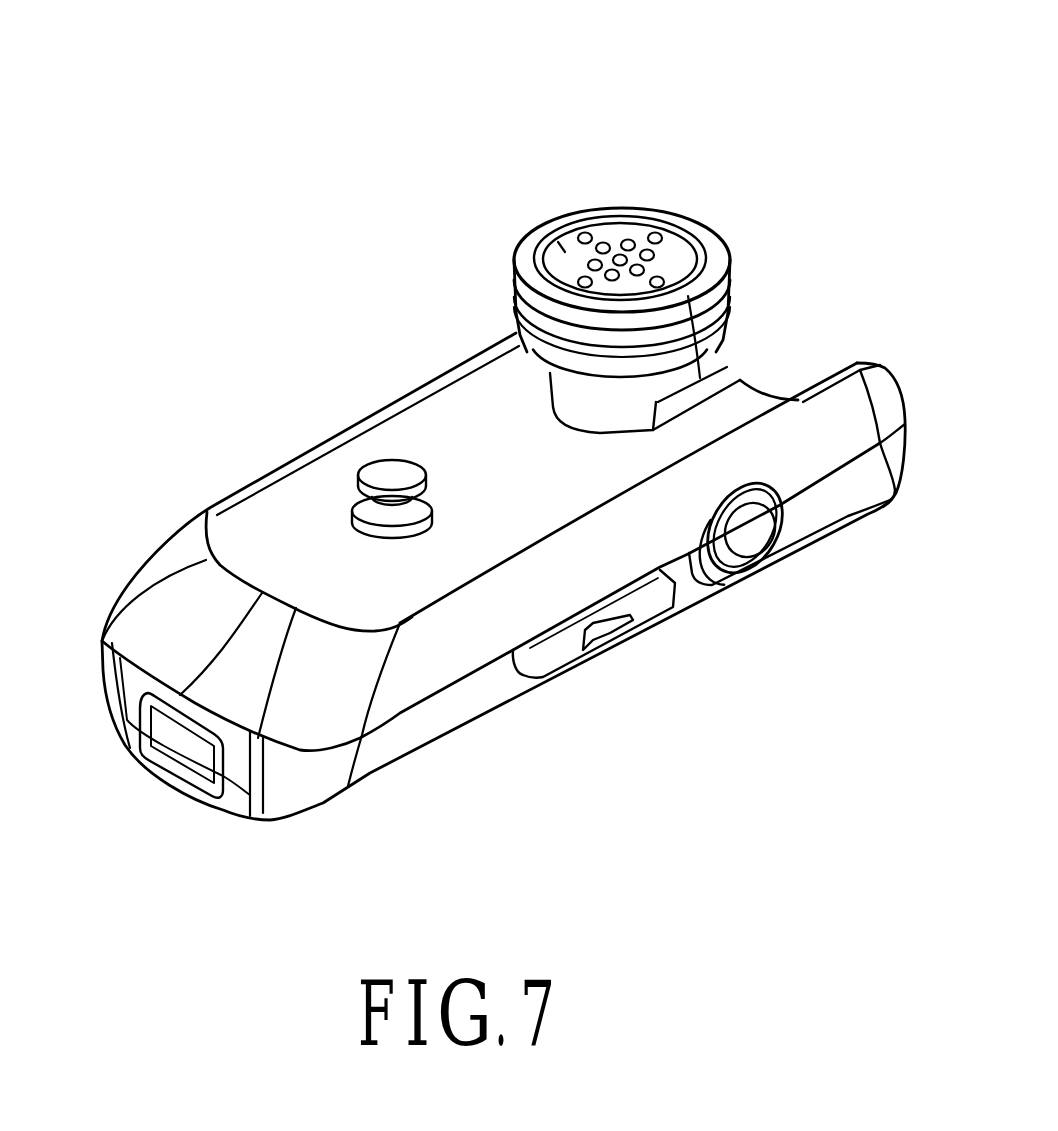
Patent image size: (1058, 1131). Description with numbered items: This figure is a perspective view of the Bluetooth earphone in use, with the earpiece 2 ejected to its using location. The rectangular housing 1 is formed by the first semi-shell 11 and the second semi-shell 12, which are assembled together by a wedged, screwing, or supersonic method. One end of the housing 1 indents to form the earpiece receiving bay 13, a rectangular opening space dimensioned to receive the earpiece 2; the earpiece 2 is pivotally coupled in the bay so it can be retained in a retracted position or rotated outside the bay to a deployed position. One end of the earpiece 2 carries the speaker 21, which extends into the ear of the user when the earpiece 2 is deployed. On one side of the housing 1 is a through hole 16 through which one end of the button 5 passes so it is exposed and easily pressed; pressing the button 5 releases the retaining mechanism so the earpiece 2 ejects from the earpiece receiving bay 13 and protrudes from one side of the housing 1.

The housing 1 is at (244, 468).
The first semi-shell 11 is at (428, 420).
The second semi-shell 12 is at (440, 722).
The earpiece receiving bay 13 is at (757, 370).
The earpiece 2 is at (627, 185).
The speaker 21 is at (545, 228).
The through hole 16 is at (782, 496).
The button 5 is at (737, 577).